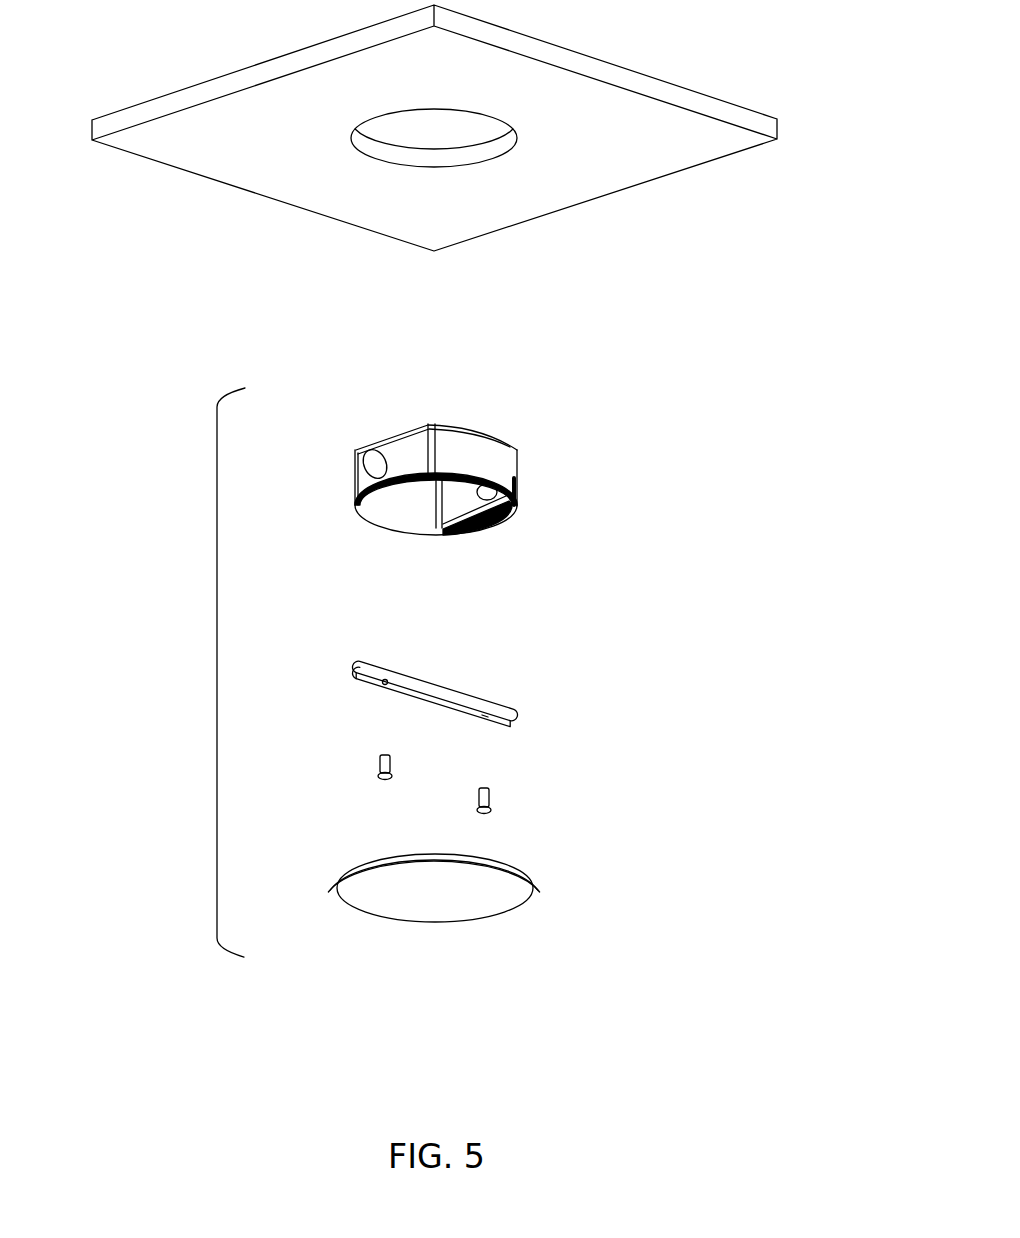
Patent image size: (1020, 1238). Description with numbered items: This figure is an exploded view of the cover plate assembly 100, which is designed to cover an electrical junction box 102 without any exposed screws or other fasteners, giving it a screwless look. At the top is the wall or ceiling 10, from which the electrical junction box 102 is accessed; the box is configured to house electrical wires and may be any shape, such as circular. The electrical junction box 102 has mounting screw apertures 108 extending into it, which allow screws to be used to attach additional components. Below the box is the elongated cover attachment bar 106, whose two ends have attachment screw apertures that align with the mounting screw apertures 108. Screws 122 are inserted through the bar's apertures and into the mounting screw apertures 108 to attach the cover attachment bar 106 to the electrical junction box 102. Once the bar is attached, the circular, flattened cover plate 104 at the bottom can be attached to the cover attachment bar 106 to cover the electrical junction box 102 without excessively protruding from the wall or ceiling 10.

The wall or ceiling 10 is at (578, 165).
The cover plate assembly 100 is at (217, 673).
The electrical junction box 102 is at (480, 453).
The cover plate 104 is at (487, 892).
The cover attachment bar 106 is at (455, 692).
The mounting screw apertures 108 is at (371, 473).
The screws 122 is at (392, 760).